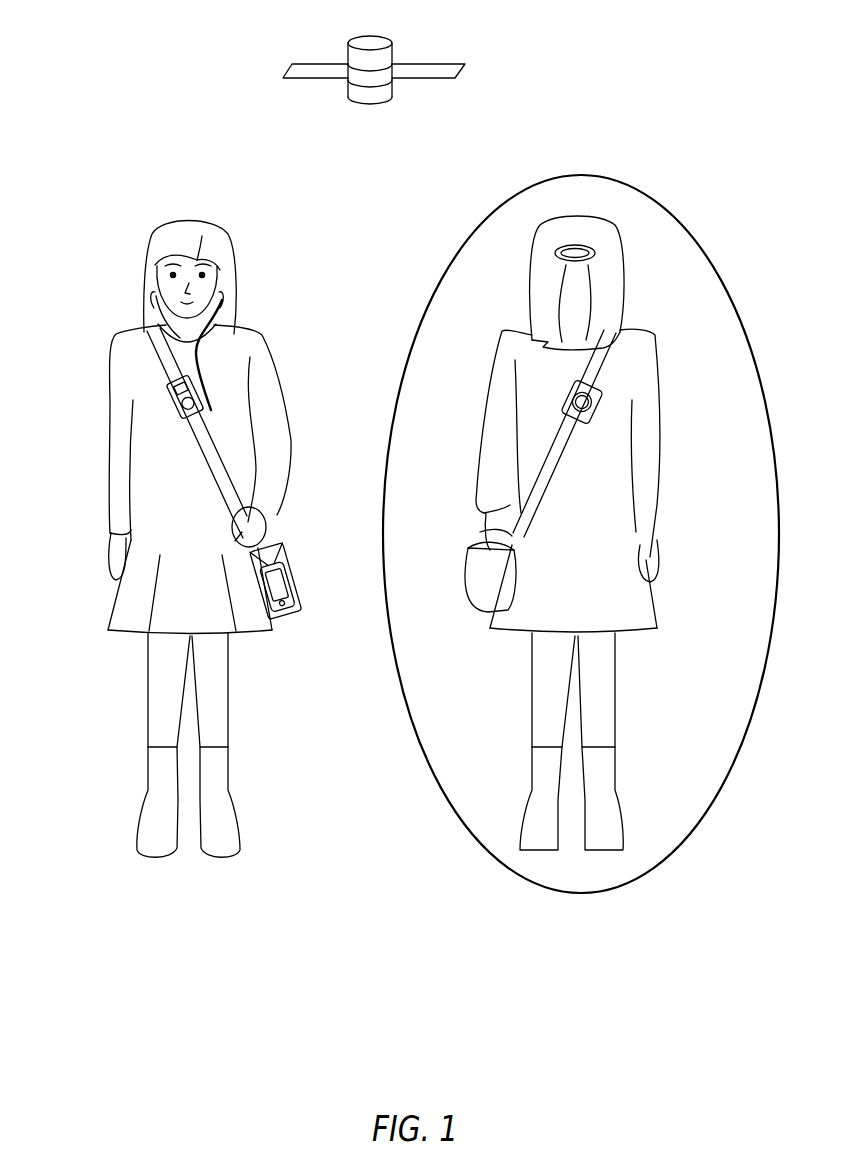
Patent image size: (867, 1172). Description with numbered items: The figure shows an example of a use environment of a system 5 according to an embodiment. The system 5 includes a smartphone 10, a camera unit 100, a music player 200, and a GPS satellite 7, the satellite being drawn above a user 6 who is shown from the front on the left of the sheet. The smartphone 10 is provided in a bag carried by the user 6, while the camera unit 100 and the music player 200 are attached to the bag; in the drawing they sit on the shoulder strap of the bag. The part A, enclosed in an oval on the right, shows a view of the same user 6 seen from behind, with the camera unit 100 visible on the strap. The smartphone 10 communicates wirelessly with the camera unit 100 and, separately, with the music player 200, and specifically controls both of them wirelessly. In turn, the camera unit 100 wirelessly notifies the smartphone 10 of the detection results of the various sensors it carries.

The system 5 is at (388, 984).
The user 6 is at (225, 233).
The GPS satellite 7 is at (393, 55).
The smartphone 10 is at (301, 576).
The camera unit 100 is at (598, 396).
The music player 200 is at (176, 396).
The part A is at (683, 216).